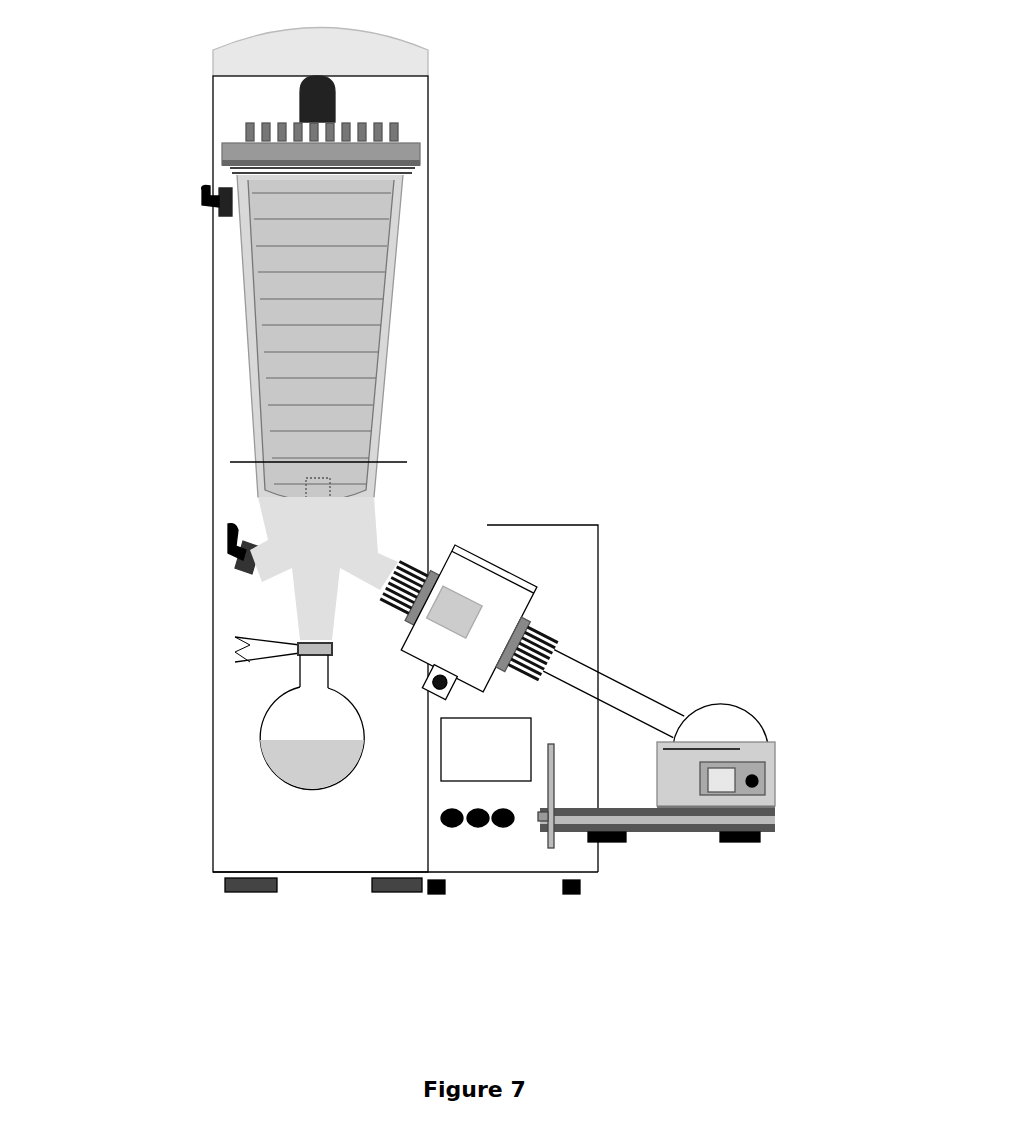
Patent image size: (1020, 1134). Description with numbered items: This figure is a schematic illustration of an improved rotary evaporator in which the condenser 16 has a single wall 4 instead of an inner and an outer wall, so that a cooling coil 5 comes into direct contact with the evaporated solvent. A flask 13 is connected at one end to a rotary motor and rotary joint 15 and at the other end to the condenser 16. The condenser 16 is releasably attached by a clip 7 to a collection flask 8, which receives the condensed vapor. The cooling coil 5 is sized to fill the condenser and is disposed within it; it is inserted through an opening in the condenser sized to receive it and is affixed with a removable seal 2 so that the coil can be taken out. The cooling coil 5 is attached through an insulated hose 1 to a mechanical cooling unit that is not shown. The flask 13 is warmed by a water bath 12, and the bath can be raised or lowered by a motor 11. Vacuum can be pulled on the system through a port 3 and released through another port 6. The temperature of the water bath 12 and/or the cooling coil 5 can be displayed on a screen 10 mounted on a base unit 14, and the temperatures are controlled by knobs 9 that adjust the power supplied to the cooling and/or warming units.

The insulated hose 1 is at (300, 100).
The removable seal 2 is at (226, 145).
The port 3 is at (198, 198).
The single wall 4 is at (250, 323).
The cooling coil 5 is at (272, 442).
The port 6 is at (226, 558).
The clip 7 is at (210, 705).
The collection flask 8 is at (312, 793).
The knobs 9 is at (452, 832).
The screen 10 is at (510, 765).
The motor 11 is at (685, 846).
The water bath 12 is at (790, 797).
The flask 13 is at (758, 713).
The base unit 14 is at (598, 633).
The rotary motor and rotary joint 15 is at (538, 586).
The condenser 16 is at (380, 551).